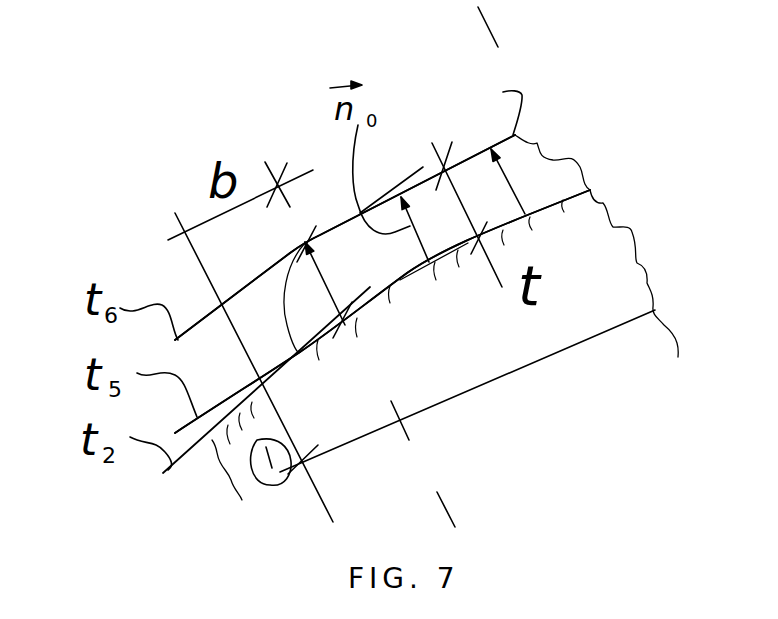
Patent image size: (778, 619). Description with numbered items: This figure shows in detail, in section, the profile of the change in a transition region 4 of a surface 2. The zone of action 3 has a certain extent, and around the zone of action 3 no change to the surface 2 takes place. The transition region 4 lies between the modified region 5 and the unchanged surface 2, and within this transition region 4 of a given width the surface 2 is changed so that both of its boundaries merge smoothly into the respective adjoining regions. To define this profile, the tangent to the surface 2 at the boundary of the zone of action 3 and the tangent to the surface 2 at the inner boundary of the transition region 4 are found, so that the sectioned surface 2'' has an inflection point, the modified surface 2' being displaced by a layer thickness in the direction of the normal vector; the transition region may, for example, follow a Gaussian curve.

The surface 2 is at (249, 393).
The surface 2' is at (345, 180).
The surface 2'' is at (382, 317).
The zone of action 3 is at (480, 386).
The transition region 4 is at (313, 170).
The modified region 5 is at (477, 130).